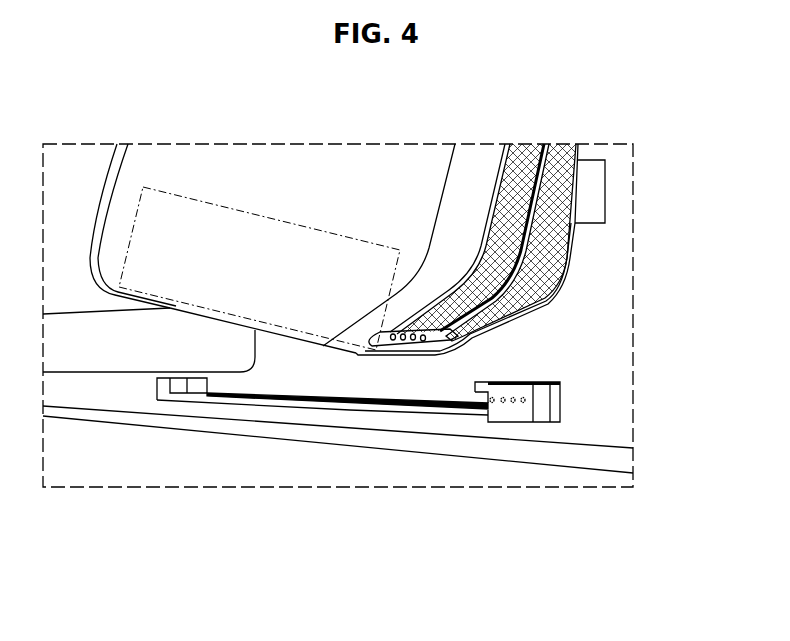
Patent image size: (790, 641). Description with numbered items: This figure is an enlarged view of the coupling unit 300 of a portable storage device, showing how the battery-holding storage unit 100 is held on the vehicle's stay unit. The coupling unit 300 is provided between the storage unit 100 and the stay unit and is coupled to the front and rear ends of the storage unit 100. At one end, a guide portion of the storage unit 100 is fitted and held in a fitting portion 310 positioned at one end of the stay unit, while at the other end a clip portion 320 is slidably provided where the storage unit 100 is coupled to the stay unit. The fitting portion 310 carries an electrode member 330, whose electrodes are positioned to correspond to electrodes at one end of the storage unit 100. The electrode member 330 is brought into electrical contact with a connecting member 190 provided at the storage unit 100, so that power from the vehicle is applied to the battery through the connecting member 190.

The storage unit 100 is at (402, 160).
The connecting member 190 is at (412, 345).
The coupling unit 300 is at (433, 459).
The fitting portion 310 is at (510, 388).
The clip portion 320 is at (188, 383).
The electrode member 330 is at (522, 400).